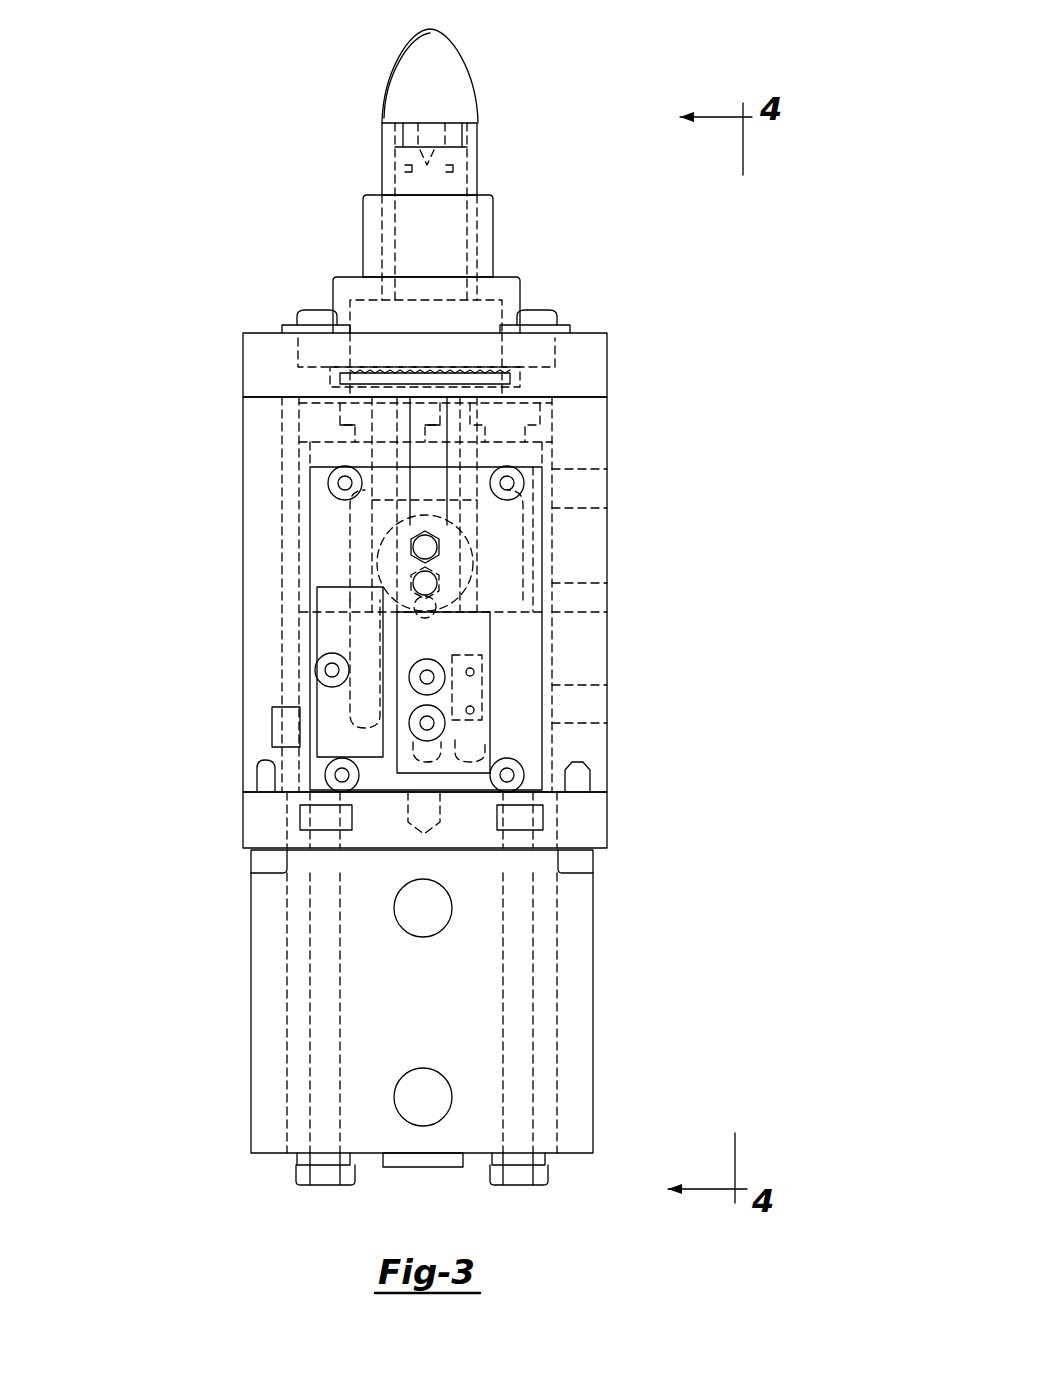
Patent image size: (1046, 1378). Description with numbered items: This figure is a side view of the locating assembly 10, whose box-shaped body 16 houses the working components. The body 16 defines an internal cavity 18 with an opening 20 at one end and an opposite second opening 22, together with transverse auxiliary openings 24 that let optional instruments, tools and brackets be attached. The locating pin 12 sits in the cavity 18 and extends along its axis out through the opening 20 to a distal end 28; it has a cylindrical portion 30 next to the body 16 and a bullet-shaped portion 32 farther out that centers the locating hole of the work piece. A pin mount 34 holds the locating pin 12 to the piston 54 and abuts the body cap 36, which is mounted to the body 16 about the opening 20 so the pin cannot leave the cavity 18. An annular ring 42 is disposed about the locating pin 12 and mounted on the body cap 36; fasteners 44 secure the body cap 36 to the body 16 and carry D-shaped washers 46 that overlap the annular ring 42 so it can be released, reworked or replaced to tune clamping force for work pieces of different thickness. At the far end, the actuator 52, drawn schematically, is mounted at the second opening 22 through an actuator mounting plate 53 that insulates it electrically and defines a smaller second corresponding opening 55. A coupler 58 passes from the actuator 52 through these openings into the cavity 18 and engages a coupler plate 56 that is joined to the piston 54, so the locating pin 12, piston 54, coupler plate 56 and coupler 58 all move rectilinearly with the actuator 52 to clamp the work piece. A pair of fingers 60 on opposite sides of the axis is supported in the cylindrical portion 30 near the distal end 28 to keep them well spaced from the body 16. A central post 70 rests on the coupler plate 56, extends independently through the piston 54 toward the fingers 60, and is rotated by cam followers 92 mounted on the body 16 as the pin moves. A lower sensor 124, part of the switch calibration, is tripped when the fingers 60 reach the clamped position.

The locating assembly 10 is at (290, 155).
The locating pin 12 is at (484, 108).
The body 16 is at (243, 490).
The internal cavity 18 is at (290, 418).
The opening 20 is at (548, 418).
The second opening 22 is at (548, 790).
The auxiliary openings 24 is at (580, 470).
The distal end 28 is at (465, 64).
The cylindrical portion 30 is at (473, 168).
The bullet-shaped portion 32 is at (440, 97).
The pin mount 34 is at (545, 387).
The body cap 36 is at (598, 338).
The annular ring 42 is at (372, 213).
The fasteners 44 is at (318, 308).
The D-shaped washers 46 is at (288, 325).
The actuator 52 is at (447, 1008).
The actuator mounting plate 53 is at (606, 814).
The piston 54 is at (303, 450).
The second corresponding opening 55 is at (465, 808).
The coupler plate 56 is at (545, 640).
The coupler 58 is at (396, 808).
The fingers 60 is at (395, 134).
The central post 70 is at (440, 247).
The cam followers 92 is at (540, 558).
The lower sensor 124 is at (540, 655).